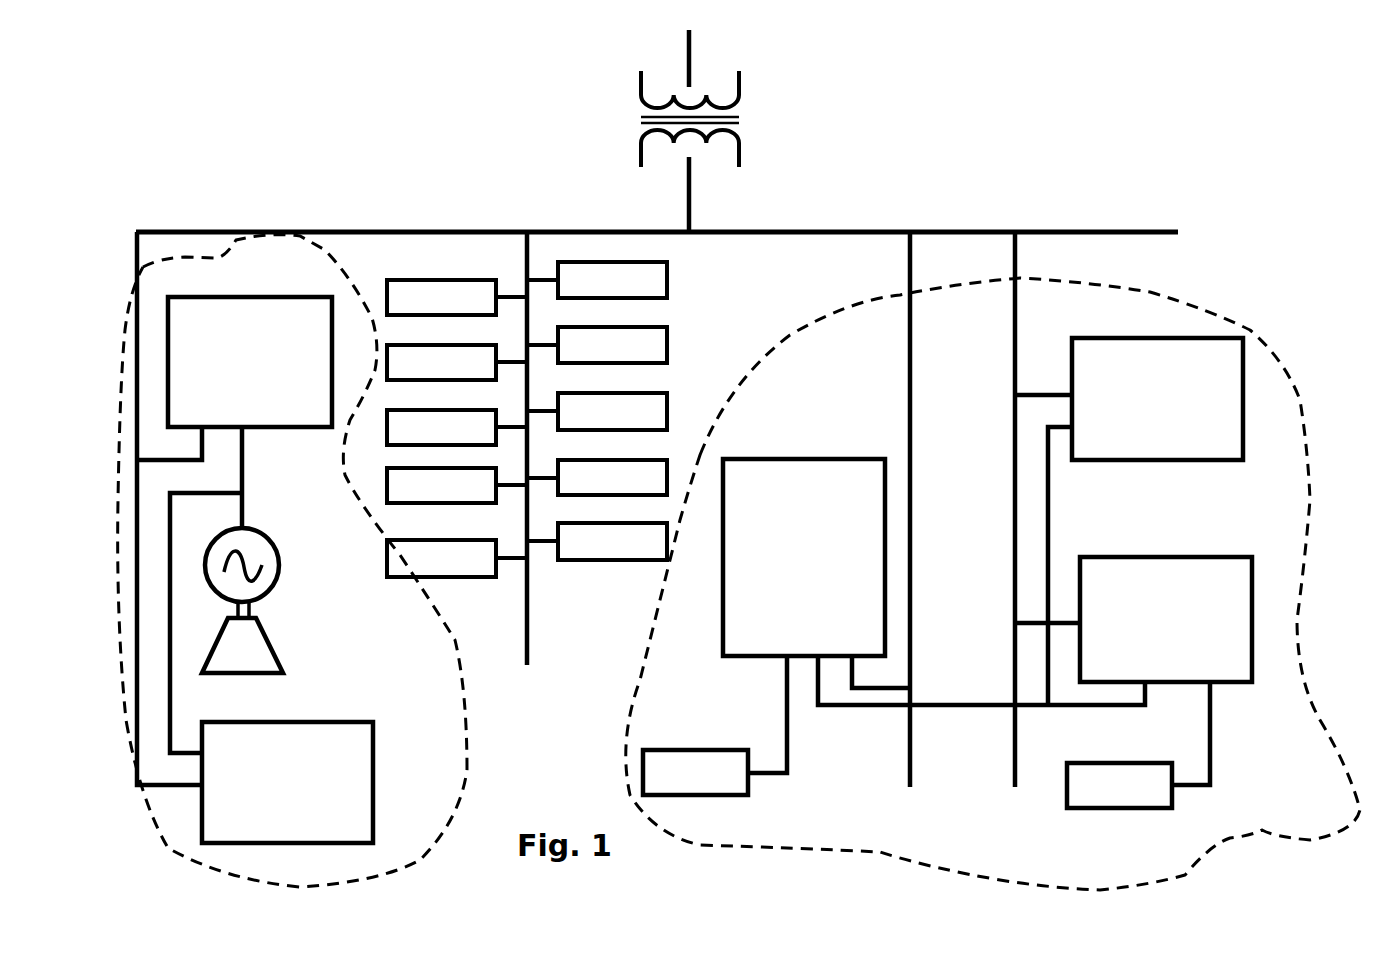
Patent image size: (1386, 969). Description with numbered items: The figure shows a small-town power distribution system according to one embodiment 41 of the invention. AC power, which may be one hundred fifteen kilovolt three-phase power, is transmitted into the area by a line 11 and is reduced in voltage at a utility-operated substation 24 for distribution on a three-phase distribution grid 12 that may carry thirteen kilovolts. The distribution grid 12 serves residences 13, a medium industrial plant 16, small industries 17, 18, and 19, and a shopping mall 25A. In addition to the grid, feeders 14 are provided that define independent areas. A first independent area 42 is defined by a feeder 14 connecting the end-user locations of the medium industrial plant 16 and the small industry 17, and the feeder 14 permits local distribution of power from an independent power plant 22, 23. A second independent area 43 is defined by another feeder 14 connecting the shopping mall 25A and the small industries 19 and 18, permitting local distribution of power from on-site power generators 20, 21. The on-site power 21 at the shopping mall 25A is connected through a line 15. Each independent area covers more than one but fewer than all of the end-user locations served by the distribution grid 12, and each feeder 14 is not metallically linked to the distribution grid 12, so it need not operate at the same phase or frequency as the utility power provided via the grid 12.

The line 11 is at (700, 52).
The substation 24 is at (745, 96).
The distribution grid 12 is at (410, 222).
The embodiment 41 is at (503, 63).
The independent area 42 is at (330, 248).
The independent area 43 is at (1187, 278).
The medium industrial plant 16 is at (290, 290).
The feeder 14 is at (250, 478).
The independent power plant 22 is at (288, 558).
The independent power plant 23 is at (277, 640).
The small industry 17 is at (352, 712).
The residences 13 is at (688, 296).
The shopping mall 25A is at (811, 447).
The line 15 is at (793, 742).
The on-site power 21 is at (718, 800).
The small industry 18 is at (1252, 392).
The small industry 19 is at (1212, 555).
The on-site power generator 20 is at (1115, 812).